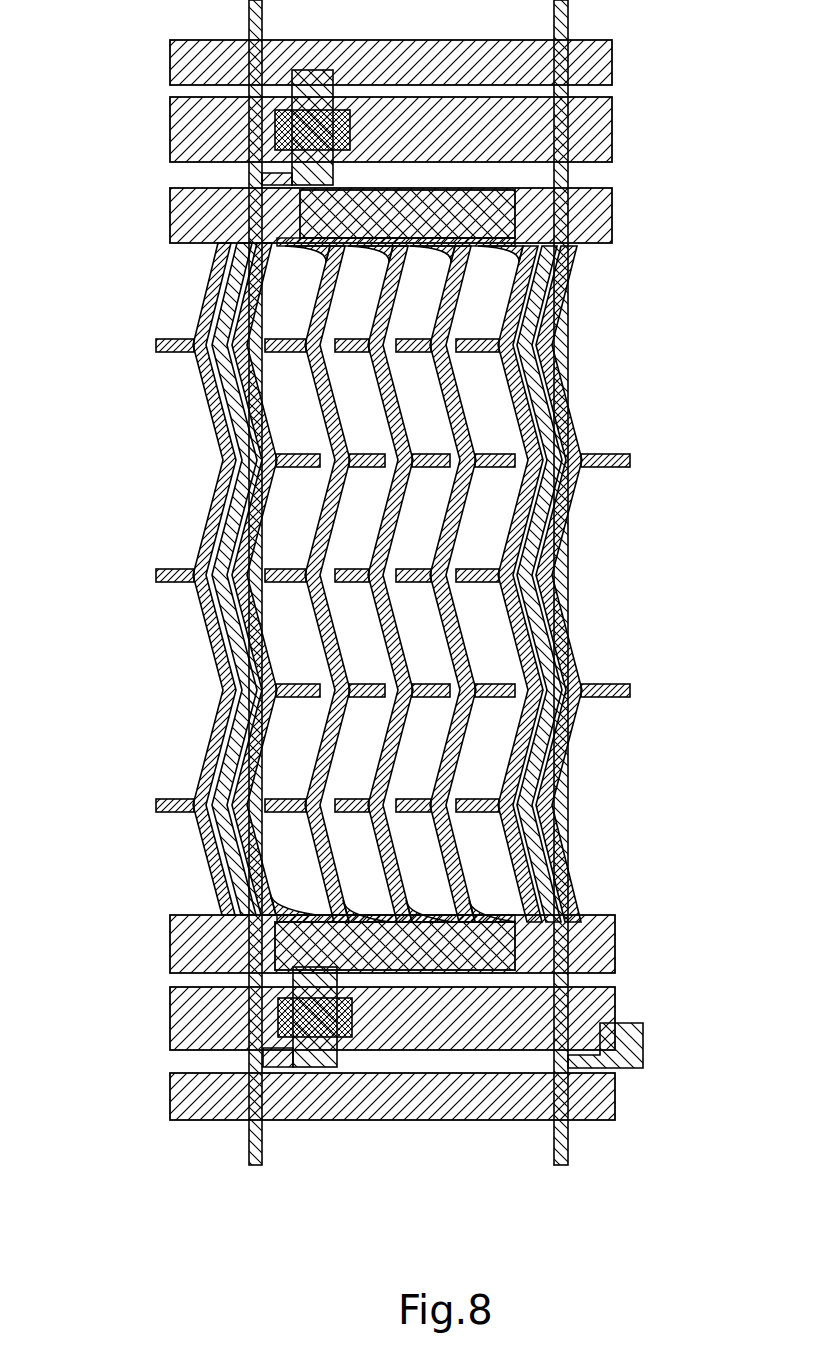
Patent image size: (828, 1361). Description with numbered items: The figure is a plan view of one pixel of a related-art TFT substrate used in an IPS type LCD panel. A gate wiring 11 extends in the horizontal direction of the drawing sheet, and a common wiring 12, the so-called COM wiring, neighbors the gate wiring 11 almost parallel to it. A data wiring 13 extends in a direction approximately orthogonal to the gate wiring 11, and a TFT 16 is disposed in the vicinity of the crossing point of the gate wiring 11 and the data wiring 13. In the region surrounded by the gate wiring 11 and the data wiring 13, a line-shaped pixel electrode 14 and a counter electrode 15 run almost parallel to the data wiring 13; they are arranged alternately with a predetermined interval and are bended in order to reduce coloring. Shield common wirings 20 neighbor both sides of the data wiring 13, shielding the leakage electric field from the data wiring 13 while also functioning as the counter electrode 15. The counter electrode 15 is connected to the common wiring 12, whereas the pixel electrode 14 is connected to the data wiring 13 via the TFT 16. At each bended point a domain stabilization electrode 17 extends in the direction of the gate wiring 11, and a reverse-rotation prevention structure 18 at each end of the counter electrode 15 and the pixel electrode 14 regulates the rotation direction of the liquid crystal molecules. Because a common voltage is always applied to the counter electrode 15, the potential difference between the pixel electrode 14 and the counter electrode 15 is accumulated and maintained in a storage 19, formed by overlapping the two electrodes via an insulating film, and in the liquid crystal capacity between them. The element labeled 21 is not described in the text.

The gate wiring 11 is at (612, 128).
The common wiring 12 is at (172, 74).
The data wiring 13 is at (220, 326).
The pixel electrode 14 is at (455, 306).
The counter electrode 15 is at (398, 402).
The TFT 16 is at (352, 1030).
The domain stabilization electrode 17 is at (497, 705).
The reverse-rotation prevention structure 18 is at (493, 903).
The storage 19 is at (507, 210).
The shield common wiring 20 is at (200, 604).
The inner plate 21 is at (490, 640).